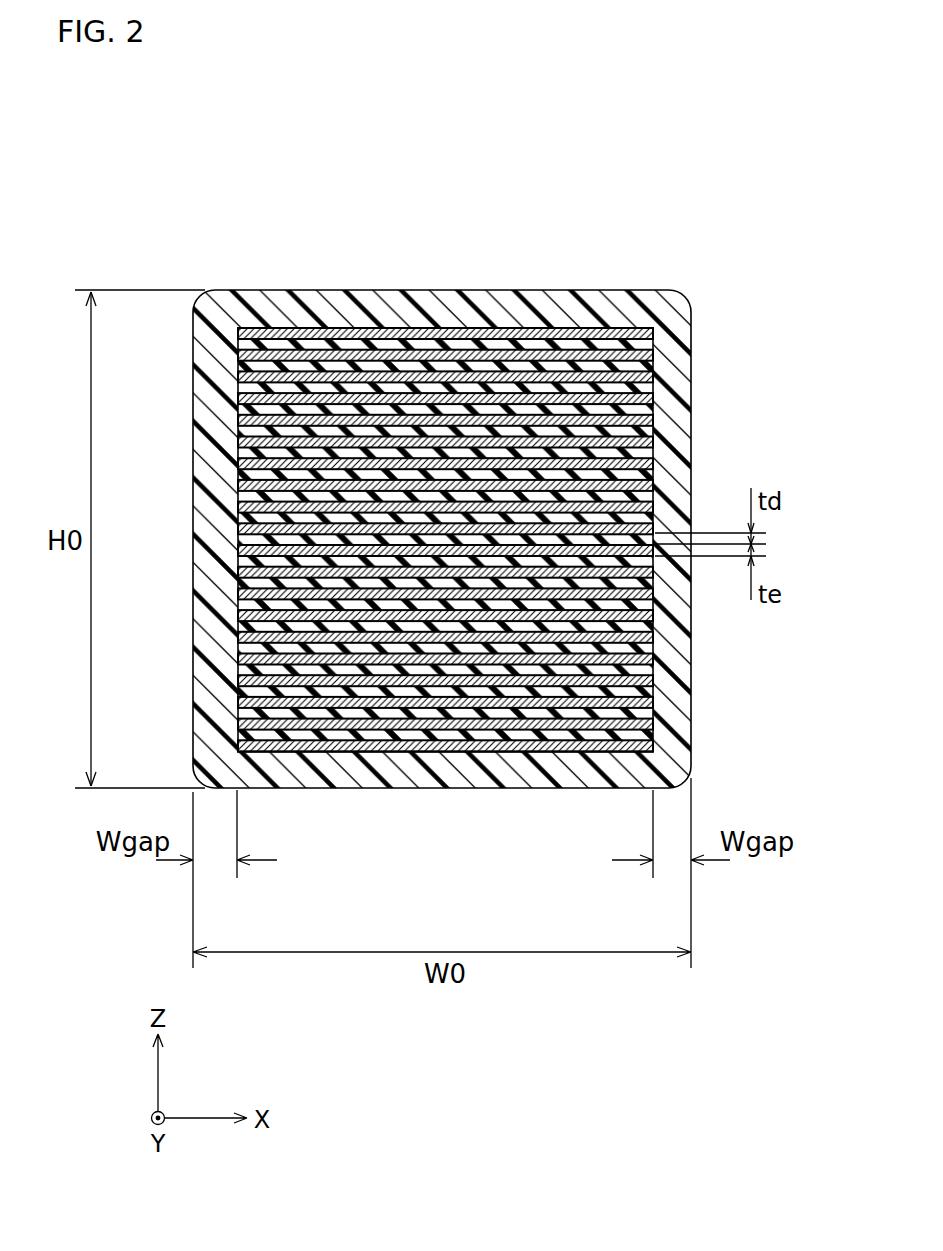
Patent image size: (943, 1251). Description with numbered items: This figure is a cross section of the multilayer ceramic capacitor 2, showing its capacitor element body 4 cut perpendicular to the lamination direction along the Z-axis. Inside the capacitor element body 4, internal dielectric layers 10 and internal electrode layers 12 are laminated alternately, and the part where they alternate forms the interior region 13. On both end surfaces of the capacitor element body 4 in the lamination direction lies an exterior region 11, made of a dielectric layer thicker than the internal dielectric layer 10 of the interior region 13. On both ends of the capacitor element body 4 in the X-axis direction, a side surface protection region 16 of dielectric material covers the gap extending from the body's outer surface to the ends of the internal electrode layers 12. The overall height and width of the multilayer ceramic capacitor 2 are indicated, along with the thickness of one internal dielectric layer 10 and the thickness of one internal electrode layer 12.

The multilayer ceramic capacitor 2 is at (647, 270).
The capacitor element body 4 is at (564, 289).
The internal dielectric layer 10 is at (652, 343).
The exterior region 11 is at (452, 312).
The internal electrode layer 12 is at (655, 330).
The interior region 13 is at (178, 328).
The side surface protection region 16 is at (218, 366).